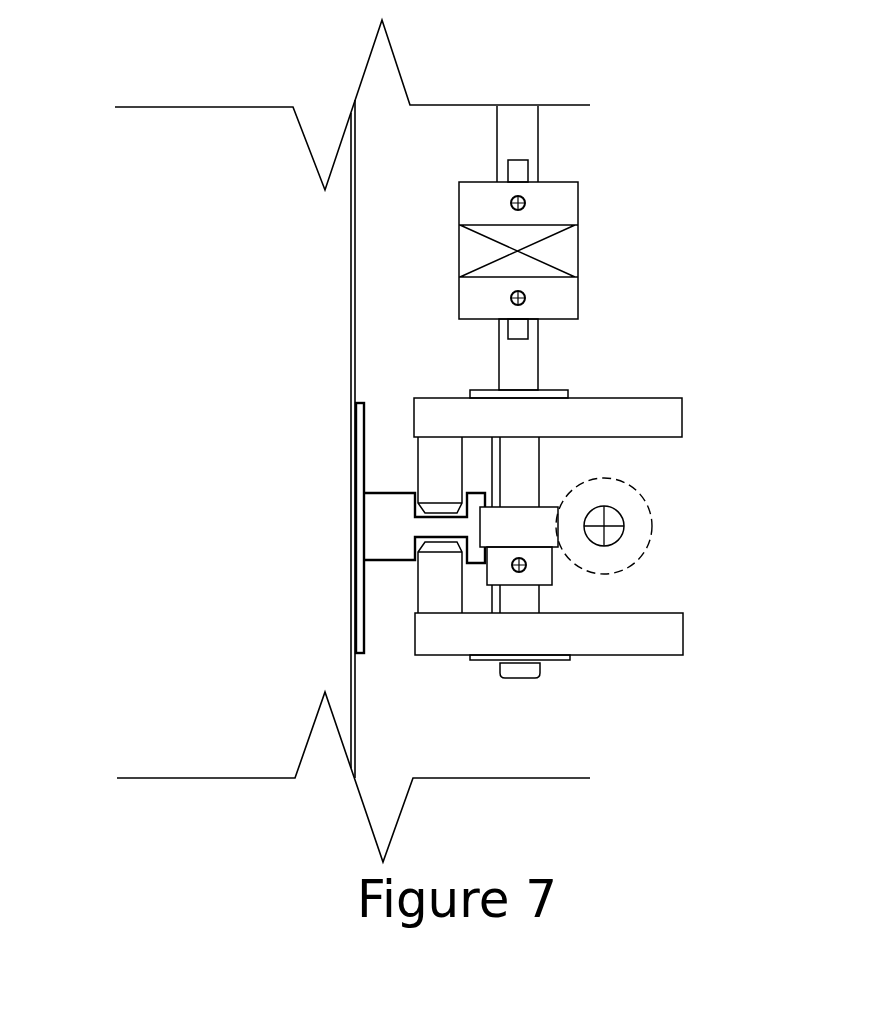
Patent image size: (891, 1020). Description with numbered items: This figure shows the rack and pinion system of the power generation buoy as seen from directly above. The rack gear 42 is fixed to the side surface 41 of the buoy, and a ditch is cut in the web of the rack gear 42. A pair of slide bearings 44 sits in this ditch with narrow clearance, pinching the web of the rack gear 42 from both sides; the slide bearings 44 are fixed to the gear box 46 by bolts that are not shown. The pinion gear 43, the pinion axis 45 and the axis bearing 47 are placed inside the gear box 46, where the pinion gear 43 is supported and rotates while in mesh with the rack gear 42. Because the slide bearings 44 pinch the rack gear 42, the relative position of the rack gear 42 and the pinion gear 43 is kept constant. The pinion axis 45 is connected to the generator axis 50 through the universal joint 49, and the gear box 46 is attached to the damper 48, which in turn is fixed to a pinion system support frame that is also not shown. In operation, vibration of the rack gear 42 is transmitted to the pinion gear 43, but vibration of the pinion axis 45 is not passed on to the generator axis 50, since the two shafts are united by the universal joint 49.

The side surface 41 is at (349, 309).
The rack gear 42 is at (399, 533).
The pinion gear 43 is at (540, 527).
The slide bearing 44 is at (444, 473).
The pinion axis 45 is at (518, 452).
The gear box 46 is at (637, 632).
The axis bearing 47 is at (483, 392).
The damper 48 is at (637, 530).
The universal joint 49 is at (570, 253).
The generator axis 50 is at (518, 132).